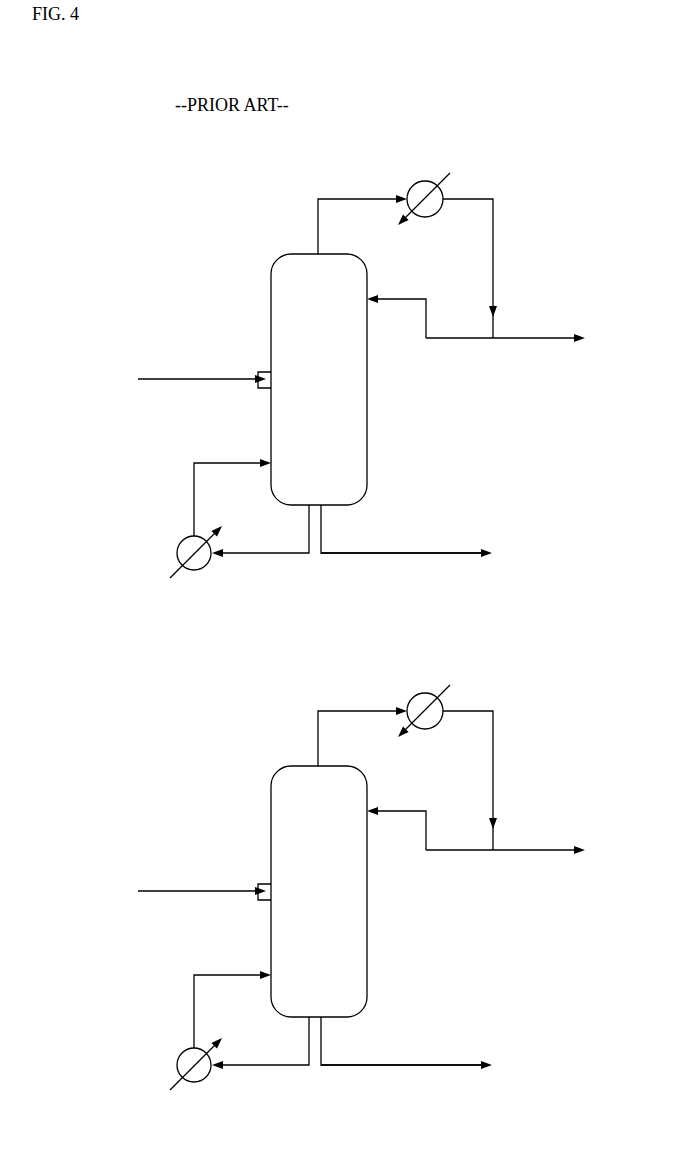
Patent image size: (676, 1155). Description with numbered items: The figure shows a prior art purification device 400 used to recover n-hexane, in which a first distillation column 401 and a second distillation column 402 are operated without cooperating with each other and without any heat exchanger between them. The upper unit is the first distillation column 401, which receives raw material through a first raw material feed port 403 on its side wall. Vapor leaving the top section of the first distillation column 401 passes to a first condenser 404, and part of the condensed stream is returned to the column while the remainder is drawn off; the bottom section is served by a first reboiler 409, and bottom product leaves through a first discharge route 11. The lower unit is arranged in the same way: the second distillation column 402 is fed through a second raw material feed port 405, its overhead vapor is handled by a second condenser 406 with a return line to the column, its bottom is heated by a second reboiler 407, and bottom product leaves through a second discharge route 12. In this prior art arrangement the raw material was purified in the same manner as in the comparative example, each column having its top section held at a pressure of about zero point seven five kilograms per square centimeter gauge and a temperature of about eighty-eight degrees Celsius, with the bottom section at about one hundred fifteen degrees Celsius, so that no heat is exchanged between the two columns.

The purification device 400 is at (136, 176).
The first distillation column 401 is at (269, 311).
The second distillation column 402 is at (269, 823).
The first raw material feed port 403 is at (266, 396).
The first condenser 404 is at (425, 181).
The second raw material feed port 405 is at (266, 908).
The second condenser 406 is at (425, 693).
The second reboiler 407 is at (176, 1063).
The first reboiler 409 is at (176, 551).
The first discharge route 11 is at (428, 551).
The second discharge route 12 is at (428, 1063).